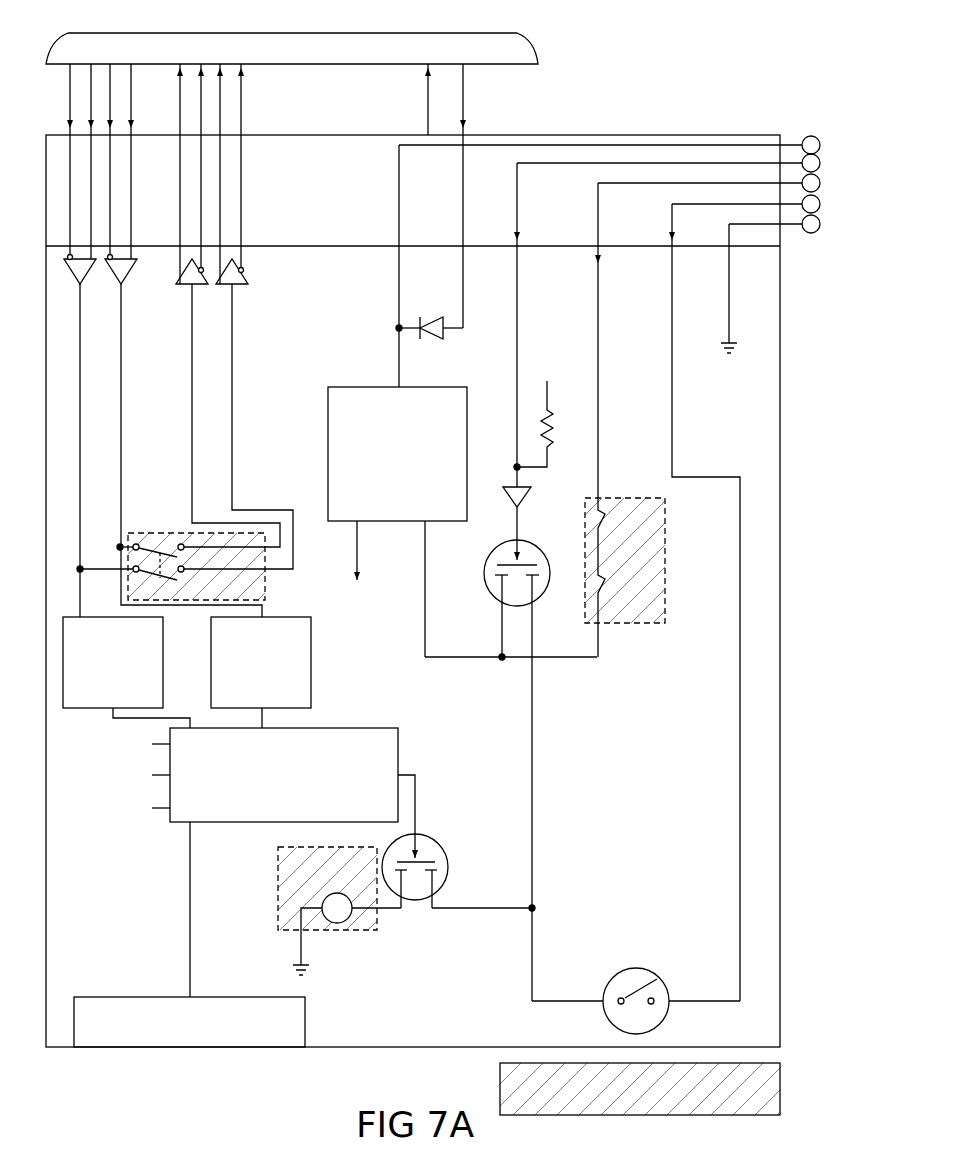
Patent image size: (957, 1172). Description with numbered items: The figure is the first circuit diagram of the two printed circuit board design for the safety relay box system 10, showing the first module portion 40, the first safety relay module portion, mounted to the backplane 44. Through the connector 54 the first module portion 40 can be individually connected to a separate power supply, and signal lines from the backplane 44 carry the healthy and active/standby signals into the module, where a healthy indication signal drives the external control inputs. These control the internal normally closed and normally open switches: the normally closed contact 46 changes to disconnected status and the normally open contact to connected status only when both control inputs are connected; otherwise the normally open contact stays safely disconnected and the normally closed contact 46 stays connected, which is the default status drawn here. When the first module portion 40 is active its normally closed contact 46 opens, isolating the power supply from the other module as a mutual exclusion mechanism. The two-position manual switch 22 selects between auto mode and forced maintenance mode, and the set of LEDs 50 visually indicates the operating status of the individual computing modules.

The safety relay box system 10 is at (688, 106).
The first manual switch 22 is at (660, 1012).
The first module portion 40 is at (55, 278).
The backplane 44 is at (62, 145).
The K_NC contact 46 is at (625, 623).
The set of LEDs 50 is at (135, 1037).
The connector 54 is at (292, 48).